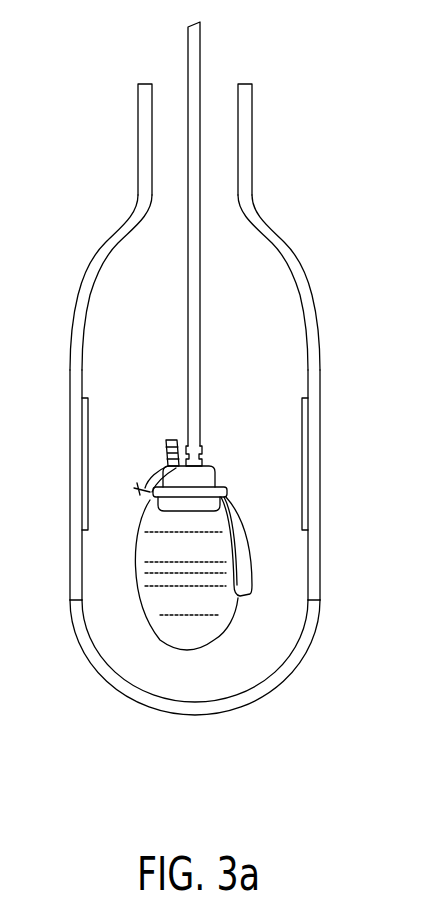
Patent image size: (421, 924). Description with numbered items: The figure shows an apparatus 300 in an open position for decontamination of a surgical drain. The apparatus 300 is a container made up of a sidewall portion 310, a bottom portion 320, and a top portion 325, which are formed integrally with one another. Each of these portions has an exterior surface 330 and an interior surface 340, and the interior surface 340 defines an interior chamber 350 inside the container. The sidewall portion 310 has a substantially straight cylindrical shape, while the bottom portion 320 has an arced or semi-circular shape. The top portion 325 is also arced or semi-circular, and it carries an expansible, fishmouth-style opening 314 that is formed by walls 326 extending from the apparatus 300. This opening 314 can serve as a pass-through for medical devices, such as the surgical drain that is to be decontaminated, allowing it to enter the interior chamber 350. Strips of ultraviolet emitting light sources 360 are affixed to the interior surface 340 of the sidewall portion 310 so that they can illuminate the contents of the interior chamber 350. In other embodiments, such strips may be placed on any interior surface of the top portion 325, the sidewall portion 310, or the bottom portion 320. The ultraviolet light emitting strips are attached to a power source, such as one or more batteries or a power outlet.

The apparatus 300 is at (142, 725).
The sidewall portion 310 is at (70, 535).
The expansible fishmouth-style opening 314 is at (226, 95).
The bottom portion 320 is at (267, 683).
The top portion 325 is at (293, 263).
The walls 326 is at (252, 160).
The exterior surface 330 is at (70, 590).
The interior surface 340 is at (70, 602).
The interior chamber 350 is at (133, 392).
The strips of ultraviolet emitting light sources 360 is at (83, 463).